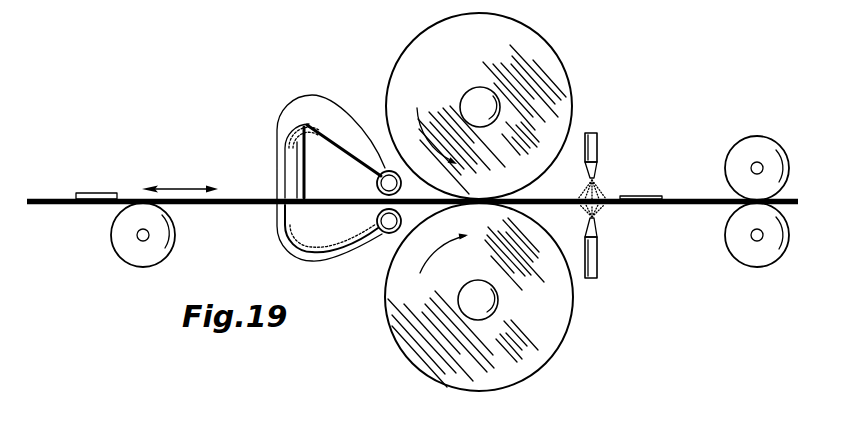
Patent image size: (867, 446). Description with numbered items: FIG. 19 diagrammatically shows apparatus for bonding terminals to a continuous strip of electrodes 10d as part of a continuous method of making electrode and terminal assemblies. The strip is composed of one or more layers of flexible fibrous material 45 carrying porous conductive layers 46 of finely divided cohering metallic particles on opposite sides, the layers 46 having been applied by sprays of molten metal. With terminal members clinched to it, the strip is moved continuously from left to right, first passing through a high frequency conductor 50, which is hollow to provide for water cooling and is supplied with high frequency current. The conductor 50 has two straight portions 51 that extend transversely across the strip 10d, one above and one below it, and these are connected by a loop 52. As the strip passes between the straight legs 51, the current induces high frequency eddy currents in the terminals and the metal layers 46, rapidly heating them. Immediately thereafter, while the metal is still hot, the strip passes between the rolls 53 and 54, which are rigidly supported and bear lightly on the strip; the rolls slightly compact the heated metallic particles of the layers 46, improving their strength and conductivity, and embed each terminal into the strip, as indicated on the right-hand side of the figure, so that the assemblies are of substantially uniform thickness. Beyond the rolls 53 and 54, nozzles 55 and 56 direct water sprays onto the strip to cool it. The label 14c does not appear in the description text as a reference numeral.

The electrodes 10d is at (254, 193).
The adhesive strip 14c is at (100, 195).
The flexible fibrous material 45 is at (85, 203).
The porous conductive layers 46 is at (38, 198).
The high frequency conductor 50 is at (333, 241).
The straight portions 51 is at (383, 170).
The loop 52 is at (285, 172).
The roll 53 is at (548, 90).
The roll 54 is at (548, 307).
The nozzle 55 is at (597, 146).
The nozzle 56 is at (597, 254).